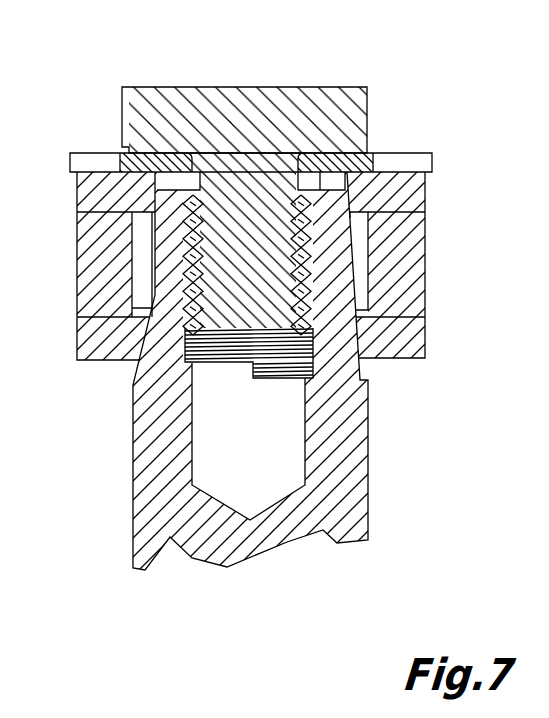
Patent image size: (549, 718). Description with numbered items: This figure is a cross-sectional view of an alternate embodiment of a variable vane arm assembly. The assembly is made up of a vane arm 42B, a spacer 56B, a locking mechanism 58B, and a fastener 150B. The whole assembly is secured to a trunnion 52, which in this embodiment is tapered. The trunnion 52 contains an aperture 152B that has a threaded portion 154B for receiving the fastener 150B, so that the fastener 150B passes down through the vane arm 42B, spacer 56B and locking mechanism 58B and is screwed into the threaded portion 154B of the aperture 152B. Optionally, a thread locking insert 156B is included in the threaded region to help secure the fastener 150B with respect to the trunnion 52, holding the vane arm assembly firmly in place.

The fastener 150B is at (235, 103).
The locking mechanism 58B is at (378, 152).
The vane arm 42B is at (403, 190).
The spacer 56B is at (388, 265).
The threaded portion 154B is at (190, 330).
The thread locking insert 156B is at (316, 352).
The aperture 152B is at (286, 420).
The trunnion 52 is at (342, 500).